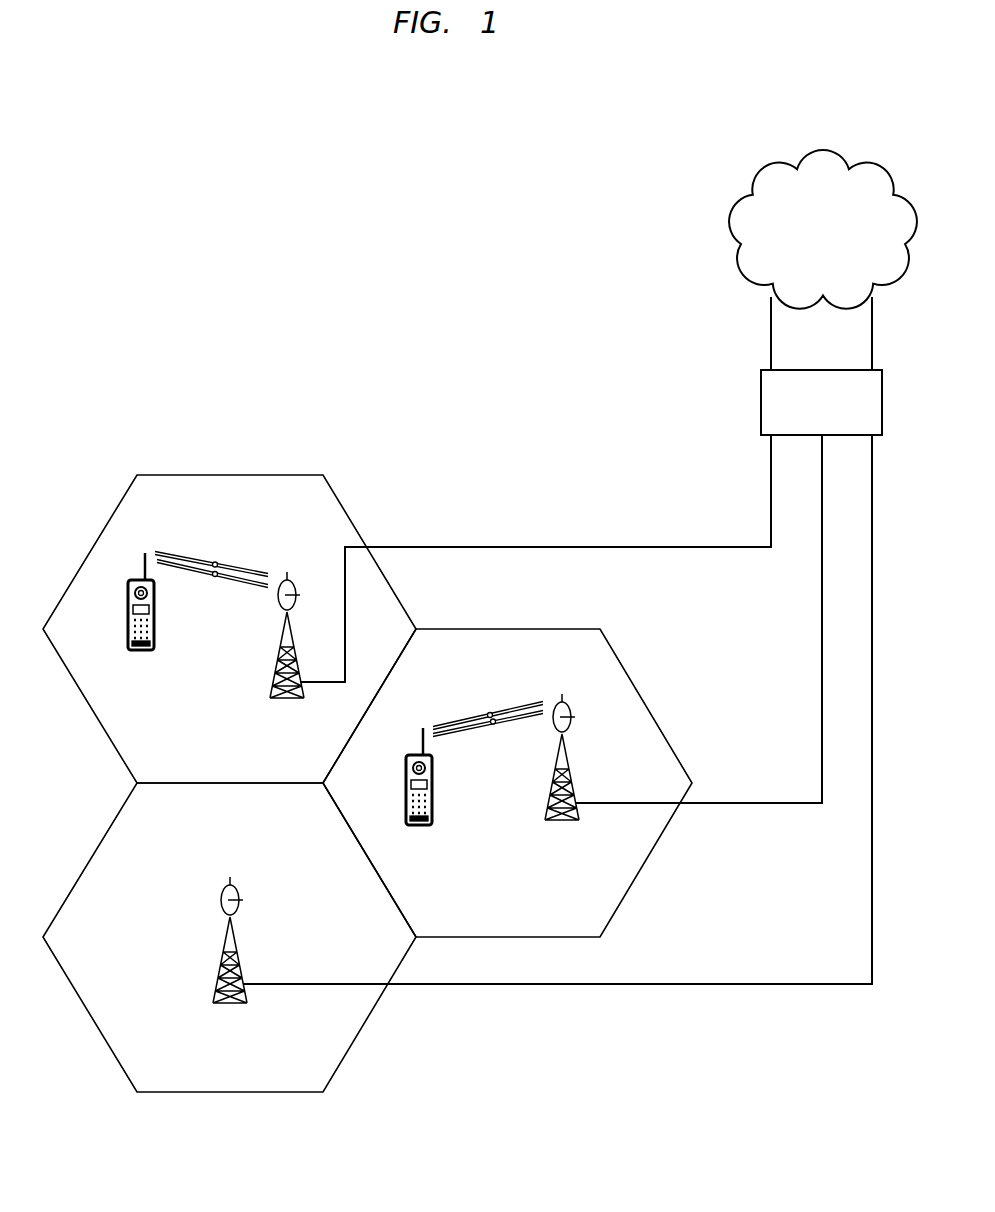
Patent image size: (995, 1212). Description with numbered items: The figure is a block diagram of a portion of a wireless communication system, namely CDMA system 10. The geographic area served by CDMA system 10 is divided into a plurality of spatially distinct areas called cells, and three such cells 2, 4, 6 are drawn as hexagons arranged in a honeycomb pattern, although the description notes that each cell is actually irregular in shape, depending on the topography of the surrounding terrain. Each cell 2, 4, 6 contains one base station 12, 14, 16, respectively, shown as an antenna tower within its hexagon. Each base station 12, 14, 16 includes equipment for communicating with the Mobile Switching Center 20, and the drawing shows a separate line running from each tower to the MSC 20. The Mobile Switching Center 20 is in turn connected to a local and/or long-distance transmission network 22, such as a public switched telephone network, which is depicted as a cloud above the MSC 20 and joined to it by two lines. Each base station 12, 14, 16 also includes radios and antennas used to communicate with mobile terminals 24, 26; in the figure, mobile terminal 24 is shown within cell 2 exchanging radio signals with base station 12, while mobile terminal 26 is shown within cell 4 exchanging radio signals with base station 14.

The CDMA system 10 is at (476, 291).
The cell 2 is at (232, 475).
The cell 4 is at (508, 629).
The cell 6 is at (235, 1092).
The base station 12 is at (297, 588).
The base station 14 is at (571, 711).
The base station 16 is at (239, 889).
The Mobile Switching Center 20 is at (761, 430).
The transmission network 22 is at (754, 289).
The mobile terminal 24 is at (155, 637).
The mobile terminal 26 is at (433, 810).